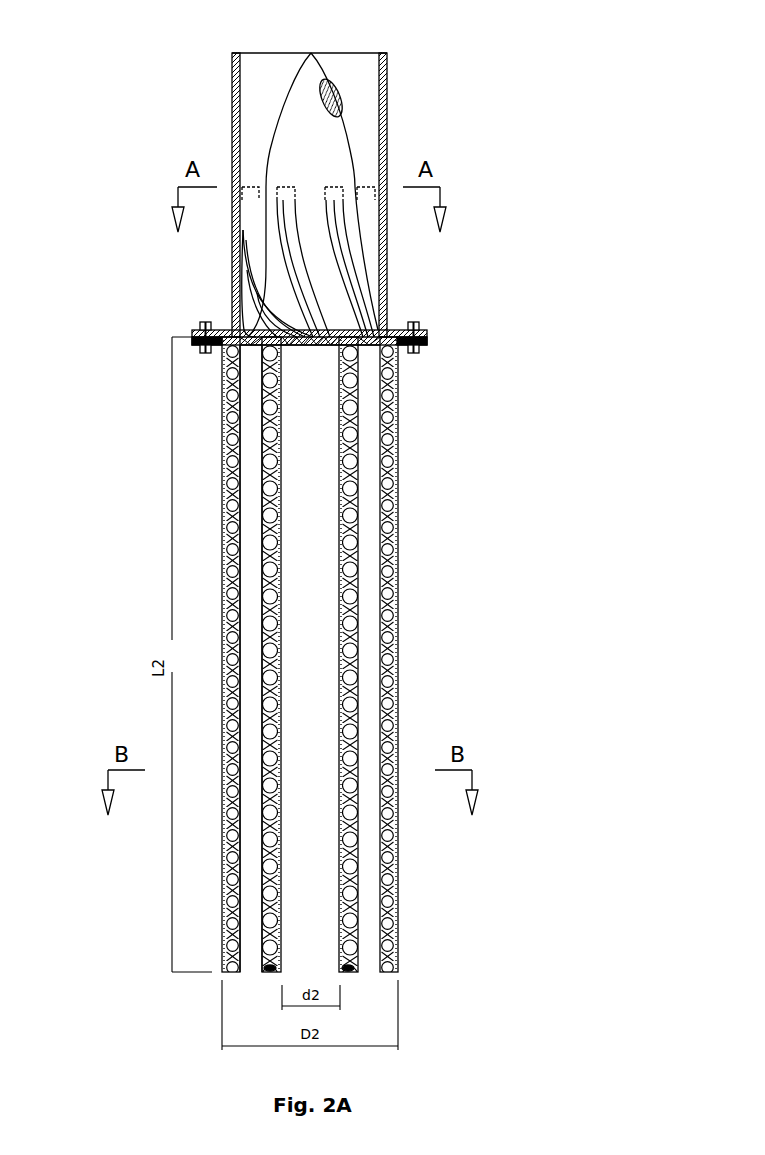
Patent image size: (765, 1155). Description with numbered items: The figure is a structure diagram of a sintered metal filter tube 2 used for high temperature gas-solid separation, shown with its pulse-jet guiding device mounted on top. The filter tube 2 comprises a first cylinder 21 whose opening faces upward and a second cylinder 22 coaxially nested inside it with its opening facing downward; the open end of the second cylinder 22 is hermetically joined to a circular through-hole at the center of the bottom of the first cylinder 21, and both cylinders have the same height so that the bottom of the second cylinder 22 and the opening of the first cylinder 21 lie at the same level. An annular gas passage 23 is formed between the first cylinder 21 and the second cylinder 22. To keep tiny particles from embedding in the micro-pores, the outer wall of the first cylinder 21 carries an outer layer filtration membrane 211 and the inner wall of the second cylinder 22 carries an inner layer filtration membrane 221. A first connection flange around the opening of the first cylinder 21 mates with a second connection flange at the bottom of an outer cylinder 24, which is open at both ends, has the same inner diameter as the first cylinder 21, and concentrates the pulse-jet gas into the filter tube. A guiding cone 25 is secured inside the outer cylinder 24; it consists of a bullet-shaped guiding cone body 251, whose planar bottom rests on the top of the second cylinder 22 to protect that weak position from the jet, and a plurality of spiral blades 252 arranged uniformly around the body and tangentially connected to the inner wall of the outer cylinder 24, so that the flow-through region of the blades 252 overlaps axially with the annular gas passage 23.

The filter tube 2 is at (467, 483).
The first cylinder 21 is at (226, 807).
The outer layer filtration membrane 211 is at (223, 882).
The second cylinder 22 is at (355, 845).
The inner layer filtration membrane 221 is at (282, 598).
The annular gas passage 23 is at (252, 575).
The outer cylinder 24 is at (233, 122).
The guiding cone 25 is at (389, 175).
The guiding cone body 251 is at (333, 155).
The spiral blades 252 is at (350, 282).